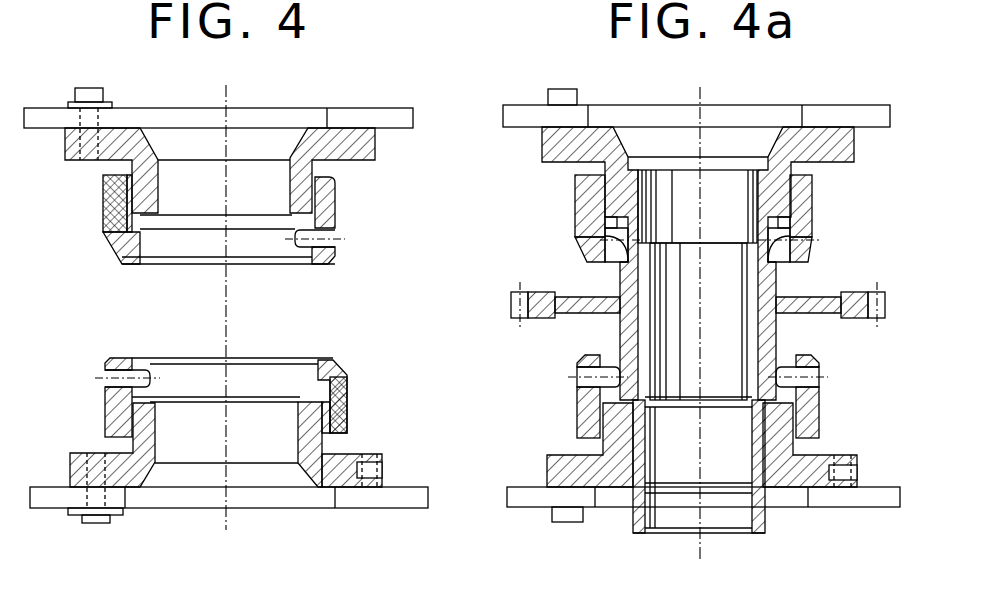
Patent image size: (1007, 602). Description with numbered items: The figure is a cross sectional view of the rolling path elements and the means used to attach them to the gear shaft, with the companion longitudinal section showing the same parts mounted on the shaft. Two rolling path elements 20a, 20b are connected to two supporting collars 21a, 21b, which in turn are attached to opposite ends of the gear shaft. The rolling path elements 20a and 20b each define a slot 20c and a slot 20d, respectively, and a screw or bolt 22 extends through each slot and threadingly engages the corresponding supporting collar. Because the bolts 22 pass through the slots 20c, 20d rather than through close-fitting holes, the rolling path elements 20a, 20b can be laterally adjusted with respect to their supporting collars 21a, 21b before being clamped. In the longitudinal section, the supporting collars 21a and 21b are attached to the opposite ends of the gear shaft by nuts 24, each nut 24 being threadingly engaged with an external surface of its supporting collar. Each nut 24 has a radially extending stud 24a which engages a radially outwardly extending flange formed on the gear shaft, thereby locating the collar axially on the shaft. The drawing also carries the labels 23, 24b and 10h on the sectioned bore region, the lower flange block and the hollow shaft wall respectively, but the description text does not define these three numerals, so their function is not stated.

In FIG. 4a, the screw or bolt 22 is at (577, 92).
In FIG. 4, the slot 20c is at (110, 118).
In FIG. 4, the rolling path element 20a is at (353, 112).
In FIG. 4a, the rolling path element 20a is at (517, 118).
In FIG. 4, the supporting collar 21a is at (372, 152).
In FIG. 4, the nut 24 is at (329, 203).
In FIG. 4a, the nut 24 is at (805, 206).
In FIG. 4, the radially extending stud 24a is at (332, 258).
In FIG. 4a, the radially extending stud 24a is at (800, 262).
In FIG. 4, the bore wall 23 is at (290, 442).
In FIG. 4a, the bore wall 23 is at (648, 432).
In FIG. 4, the supporting collar 21b is at (343, 458).
In FIG. 4, the slot 20d is at (78, 497).
In FIG. 4, the rolling path element 20b is at (354, 500).
In FIG. 4a, the rolling path element 20b is at (531, 498).
In FIG. 4a, the lower flange block 24b is at (562, 457).
In FIG. 4a, the hollow tube 10h is at (752, 435).